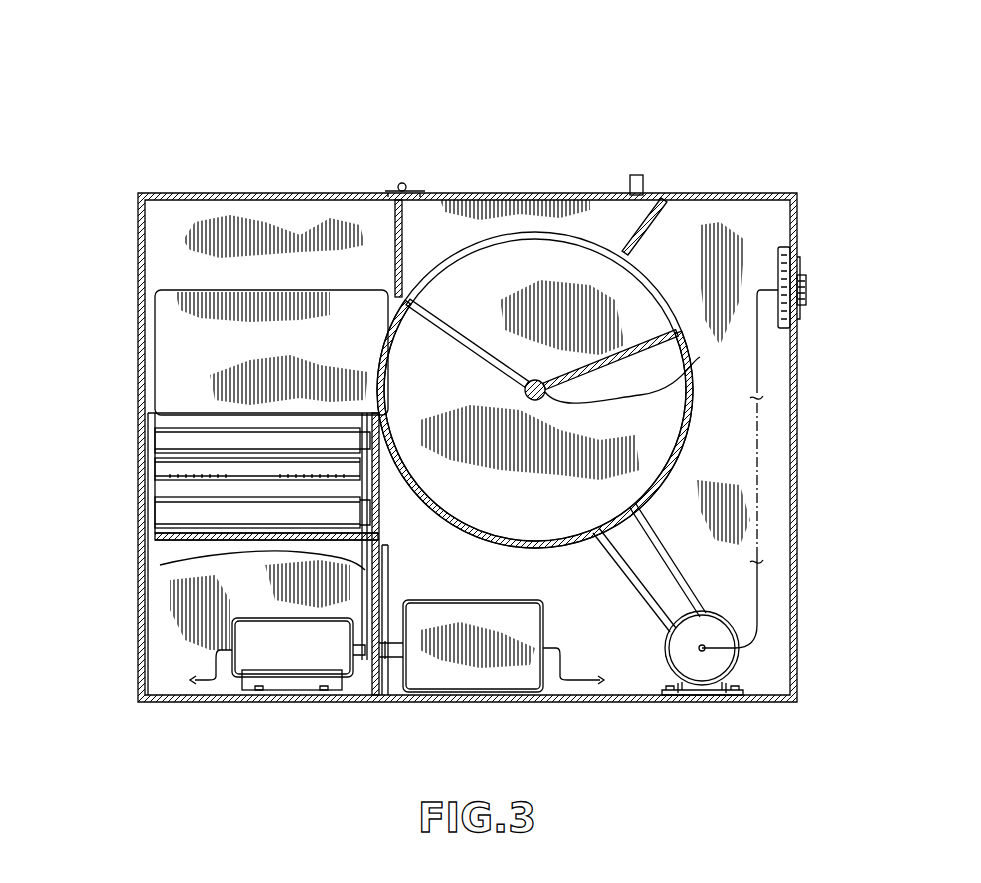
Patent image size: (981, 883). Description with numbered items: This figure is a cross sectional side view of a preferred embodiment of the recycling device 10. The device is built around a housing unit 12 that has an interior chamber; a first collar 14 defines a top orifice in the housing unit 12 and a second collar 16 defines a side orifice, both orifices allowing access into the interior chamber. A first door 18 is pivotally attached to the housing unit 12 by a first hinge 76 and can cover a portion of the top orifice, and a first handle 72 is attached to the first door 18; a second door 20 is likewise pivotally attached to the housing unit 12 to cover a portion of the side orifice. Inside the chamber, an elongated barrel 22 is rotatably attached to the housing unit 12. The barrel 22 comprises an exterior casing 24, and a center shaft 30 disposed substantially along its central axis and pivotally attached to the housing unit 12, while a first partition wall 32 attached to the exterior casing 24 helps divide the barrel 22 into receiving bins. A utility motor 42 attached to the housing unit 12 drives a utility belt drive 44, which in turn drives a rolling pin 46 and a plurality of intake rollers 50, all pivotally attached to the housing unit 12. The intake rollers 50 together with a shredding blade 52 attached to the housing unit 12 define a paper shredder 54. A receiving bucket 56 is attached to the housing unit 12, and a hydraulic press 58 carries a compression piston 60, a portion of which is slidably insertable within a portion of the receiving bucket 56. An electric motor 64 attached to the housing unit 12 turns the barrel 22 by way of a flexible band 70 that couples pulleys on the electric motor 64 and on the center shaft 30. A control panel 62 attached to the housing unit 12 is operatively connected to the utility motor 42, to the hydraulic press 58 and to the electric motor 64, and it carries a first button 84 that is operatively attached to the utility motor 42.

The recycling device 10 is at (168, 80).
The housing unit 12 is at (248, 193).
The first collar 14 is at (657, 197).
The second collar 16 is at (155, 330).
The first door 18 is at (485, 193).
The second door 20 is at (200, 385).
The elongated barrel 22 is at (653, 288).
The exterior casing 24 is at (665, 480).
The center shaft 30 is at (633, 412).
The first partition wall 32 is at (700, 357).
The utility motor 42 is at (278, 650).
The utility belt drive 44 is at (355, 575).
The rolling pin 46 is at (188, 512).
The intake rollers 50 is at (193, 438).
The shredding blade 52 is at (193, 473).
The paper shredder 54 is at (153, 417).
The receiving bucket 56 is at (200, 612).
The hydraulic press 58 is at (452, 640).
The compression piston 60 is at (386, 660).
The control panel 62 is at (803, 247).
The electric motor 64 is at (702, 660).
The flexible band 70 is at (635, 587).
The first handle 72 is at (636, 175).
The first hinge 76 is at (410, 185).
The first button 84 is at (806, 290).